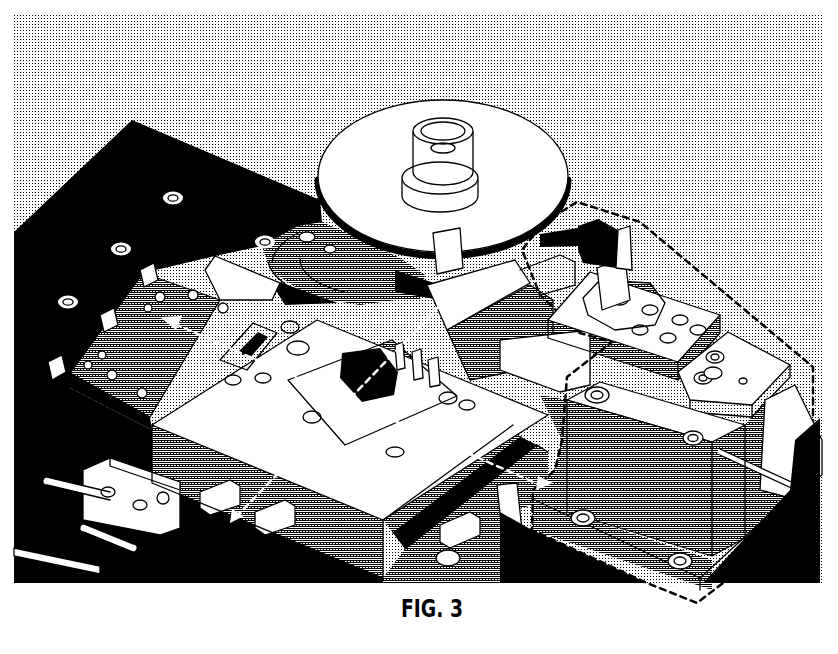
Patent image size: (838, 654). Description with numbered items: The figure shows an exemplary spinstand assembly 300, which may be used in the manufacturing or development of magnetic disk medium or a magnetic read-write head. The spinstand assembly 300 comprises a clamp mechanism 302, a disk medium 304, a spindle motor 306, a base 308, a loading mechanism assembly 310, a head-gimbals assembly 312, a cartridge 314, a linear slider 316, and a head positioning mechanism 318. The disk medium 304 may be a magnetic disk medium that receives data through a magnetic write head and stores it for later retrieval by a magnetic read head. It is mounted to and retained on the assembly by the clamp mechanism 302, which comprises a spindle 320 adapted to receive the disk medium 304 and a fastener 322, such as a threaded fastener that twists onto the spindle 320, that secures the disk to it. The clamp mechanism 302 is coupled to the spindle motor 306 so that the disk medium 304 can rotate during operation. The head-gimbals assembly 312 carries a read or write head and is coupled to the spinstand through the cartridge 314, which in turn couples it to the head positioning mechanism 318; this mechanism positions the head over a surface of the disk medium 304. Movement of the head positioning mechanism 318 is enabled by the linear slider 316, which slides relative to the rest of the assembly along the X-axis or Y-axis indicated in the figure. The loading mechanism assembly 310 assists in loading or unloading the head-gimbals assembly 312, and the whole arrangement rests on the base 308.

The spinstand assembly 300 is at (418, 311).
The clamp mechanism 302 is at (443, 135).
The disk medium 304 is at (531, 147).
The spindle motor 306 is at (326, 221).
The base 308 is at (108, 144).
The loading mechanism assembly 310 is at (672, 395).
The head-gimbals assembly 312 is at (566, 268).
The cartridge 314 is at (502, 306).
The linear slider 316 is at (468, 490).
The head positioning mechanism 318 is at (427, 492).
The spindle 320 is at (454, 118).
The fastener 322 is at (473, 168).